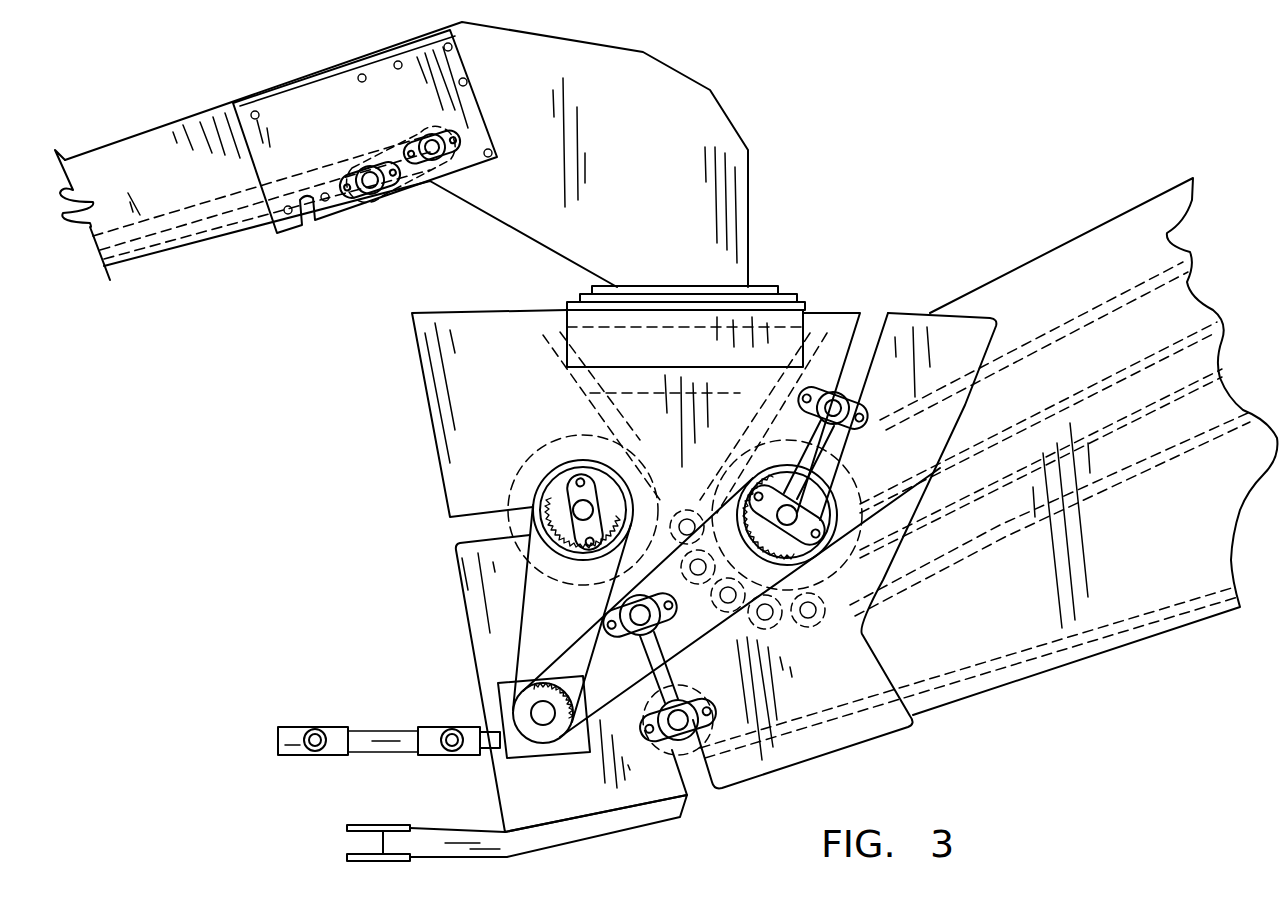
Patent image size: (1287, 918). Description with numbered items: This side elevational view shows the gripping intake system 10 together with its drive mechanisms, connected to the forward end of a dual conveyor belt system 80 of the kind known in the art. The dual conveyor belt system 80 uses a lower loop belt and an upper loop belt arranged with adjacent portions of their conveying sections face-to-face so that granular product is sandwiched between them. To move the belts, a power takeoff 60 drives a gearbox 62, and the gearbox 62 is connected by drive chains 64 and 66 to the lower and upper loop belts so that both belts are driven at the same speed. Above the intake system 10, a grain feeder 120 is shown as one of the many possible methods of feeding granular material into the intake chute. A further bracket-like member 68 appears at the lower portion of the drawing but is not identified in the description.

The gripping intake system 10 is at (846, 300).
The power takeoff 60 is at (388, 710).
The gearbox 62 is at (490, 687).
The drive chain 64 is at (527, 598).
The drive chain 66 is at (690, 647).
The mounting bracket 68 is at (475, 840).
The dual conveyor belt system 80 is at (1062, 292).
The grain feeder 120 is at (630, 100).